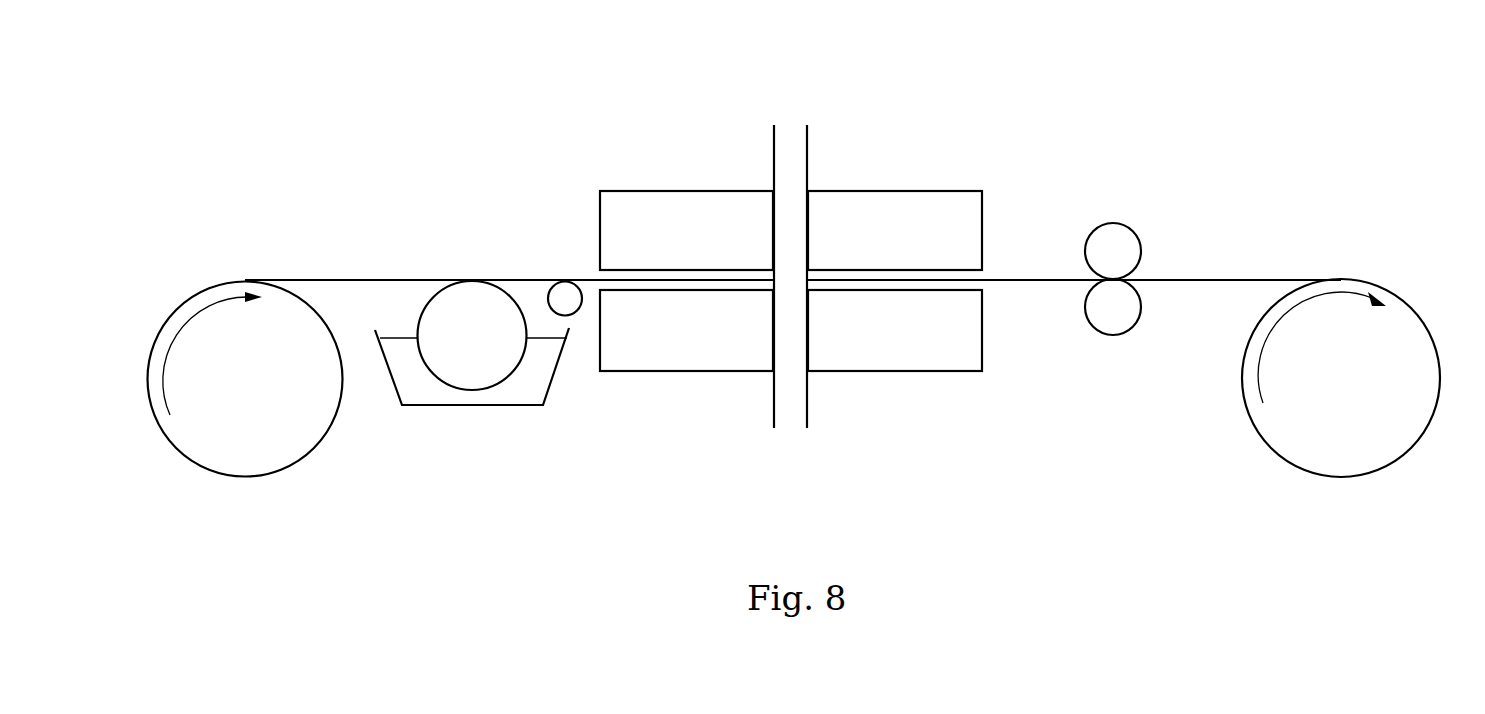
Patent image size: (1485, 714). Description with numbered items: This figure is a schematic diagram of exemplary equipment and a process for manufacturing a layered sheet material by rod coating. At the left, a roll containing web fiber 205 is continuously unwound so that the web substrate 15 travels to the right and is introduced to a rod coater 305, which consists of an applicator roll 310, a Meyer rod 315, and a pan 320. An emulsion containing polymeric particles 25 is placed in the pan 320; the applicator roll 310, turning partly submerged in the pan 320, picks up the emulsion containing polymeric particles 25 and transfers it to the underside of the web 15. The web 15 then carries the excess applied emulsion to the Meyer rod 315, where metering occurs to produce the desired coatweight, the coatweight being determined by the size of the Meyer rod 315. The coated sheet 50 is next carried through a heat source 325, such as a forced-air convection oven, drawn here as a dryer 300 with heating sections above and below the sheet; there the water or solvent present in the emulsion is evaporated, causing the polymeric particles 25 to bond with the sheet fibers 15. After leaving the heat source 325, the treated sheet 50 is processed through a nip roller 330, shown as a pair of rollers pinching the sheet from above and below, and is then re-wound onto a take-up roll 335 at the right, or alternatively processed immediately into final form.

The web substrate 15 is at (402, 278).
The polymeric particles 25 is at (493, 397).
The coated sheet 50 is at (1243, 275).
The roll containing web fiber 205 is at (257, 477).
The dryer 300 is at (882, 231).
The rod coater 305 is at (474, 321).
The applicator roll 310 is at (418, 315).
The Meyer rod 315 is at (572, 310).
The pan 320 is at (512, 407).
The heat source 325 is at (843, 213).
The nip roller 330 is at (1150, 267).
The take-up roll 335 is at (1299, 440).